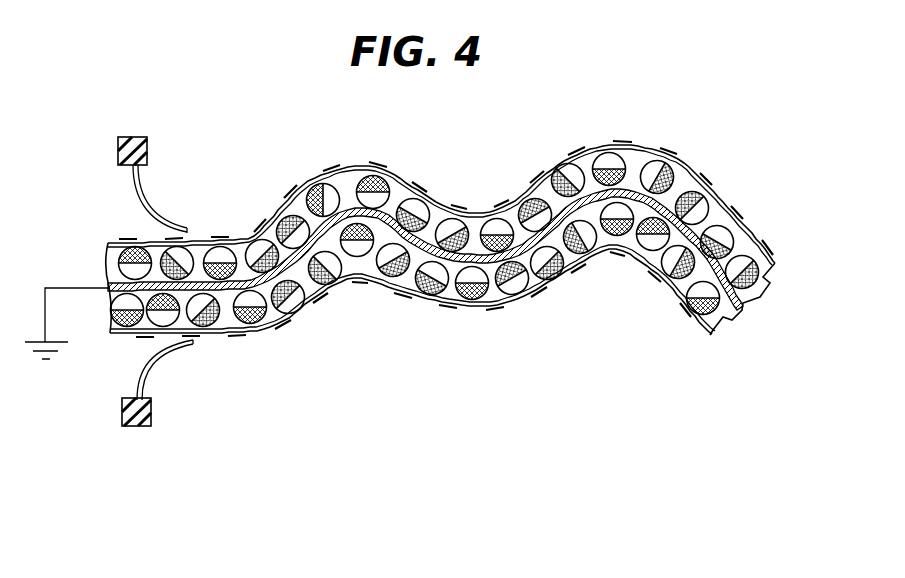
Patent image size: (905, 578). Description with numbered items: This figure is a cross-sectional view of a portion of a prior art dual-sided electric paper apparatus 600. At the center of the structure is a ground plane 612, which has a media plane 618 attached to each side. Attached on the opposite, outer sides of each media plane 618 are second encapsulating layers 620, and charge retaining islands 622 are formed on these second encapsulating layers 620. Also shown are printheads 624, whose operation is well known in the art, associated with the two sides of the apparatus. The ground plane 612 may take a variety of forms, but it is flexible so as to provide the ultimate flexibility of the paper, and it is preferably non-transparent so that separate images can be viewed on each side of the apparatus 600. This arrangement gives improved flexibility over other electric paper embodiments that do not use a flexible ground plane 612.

The dual-sided electric paper apparatus 600 is at (699, 145).
The ground plane 612 is at (733, 300).
The media plane 618 is at (298, 205).
The second encapsulating layer 620 is at (342, 169).
The charge retaining island 622 is at (554, 168).
The printhead 624 is at (133, 206).